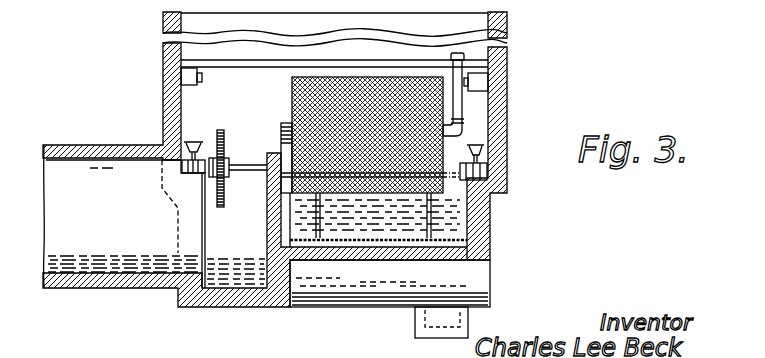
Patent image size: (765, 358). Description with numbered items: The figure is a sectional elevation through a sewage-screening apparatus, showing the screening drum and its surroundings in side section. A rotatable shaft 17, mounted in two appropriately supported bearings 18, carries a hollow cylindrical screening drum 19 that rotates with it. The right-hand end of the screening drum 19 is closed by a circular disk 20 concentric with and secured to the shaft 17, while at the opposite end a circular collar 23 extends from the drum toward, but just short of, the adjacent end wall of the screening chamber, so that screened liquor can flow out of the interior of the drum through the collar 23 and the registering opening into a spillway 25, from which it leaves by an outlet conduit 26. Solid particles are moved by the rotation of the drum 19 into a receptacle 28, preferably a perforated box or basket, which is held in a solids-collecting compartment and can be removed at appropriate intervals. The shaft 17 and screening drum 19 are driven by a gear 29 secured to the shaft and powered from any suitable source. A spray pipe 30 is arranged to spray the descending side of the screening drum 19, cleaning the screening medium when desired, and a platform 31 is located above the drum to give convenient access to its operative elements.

The rotatable shaft 17 is at (240, 170).
The bearings 18 is at (178, 148).
The screening drum 19 is at (293, 93).
The circular disk 20 is at (445, 145).
The circular collar 23 is at (284, 139).
The spillway 25 is at (237, 250).
The outlet conduit 26 is at (103, 242).
The receptacle 28 is at (493, 224).
The gear 29 is at (215, 140).
The spray pipe 30 is at (462, 102).
The platform 31 is at (208, 66).